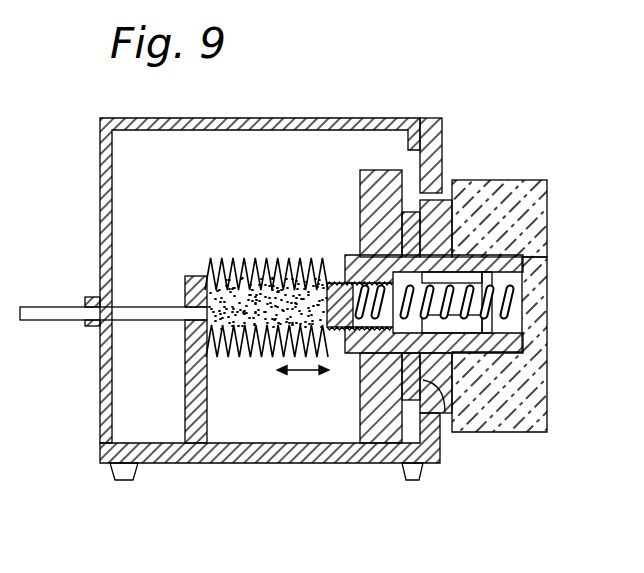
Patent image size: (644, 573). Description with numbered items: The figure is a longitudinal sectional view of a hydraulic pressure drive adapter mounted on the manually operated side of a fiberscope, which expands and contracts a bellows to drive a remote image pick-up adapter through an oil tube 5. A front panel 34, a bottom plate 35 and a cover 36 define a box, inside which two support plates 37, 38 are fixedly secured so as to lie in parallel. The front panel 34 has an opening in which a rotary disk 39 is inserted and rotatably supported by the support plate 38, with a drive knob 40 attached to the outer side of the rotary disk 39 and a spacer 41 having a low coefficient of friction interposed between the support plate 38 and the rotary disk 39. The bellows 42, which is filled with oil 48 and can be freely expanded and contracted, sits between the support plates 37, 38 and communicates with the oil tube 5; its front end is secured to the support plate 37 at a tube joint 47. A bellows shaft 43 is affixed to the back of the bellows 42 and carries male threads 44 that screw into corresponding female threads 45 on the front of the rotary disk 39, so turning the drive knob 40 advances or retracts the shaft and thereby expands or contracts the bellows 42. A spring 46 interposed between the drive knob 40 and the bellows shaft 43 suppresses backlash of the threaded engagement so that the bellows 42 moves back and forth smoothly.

The oil tube 5 is at (53, 320).
The front panel 34 is at (443, 160).
The bottom plate 35 is at (223, 455).
The cover 36 is at (312, 118).
The support plate 37 is at (193, 436).
The support plate 38 is at (383, 428).
The rotary disk 39 is at (449, 383).
The drive knob 40 is at (517, 407).
The spacer 41 is at (445, 413).
The bellows 42 is at (247, 258).
The bellows shaft 43 is at (338, 282).
The male threads 44 is at (343, 325).
The female threads 45 is at (360, 335).
The spring 46 is at (484, 272).
The tube joint 47 is at (183, 297).
The oil 48 is at (245, 359).